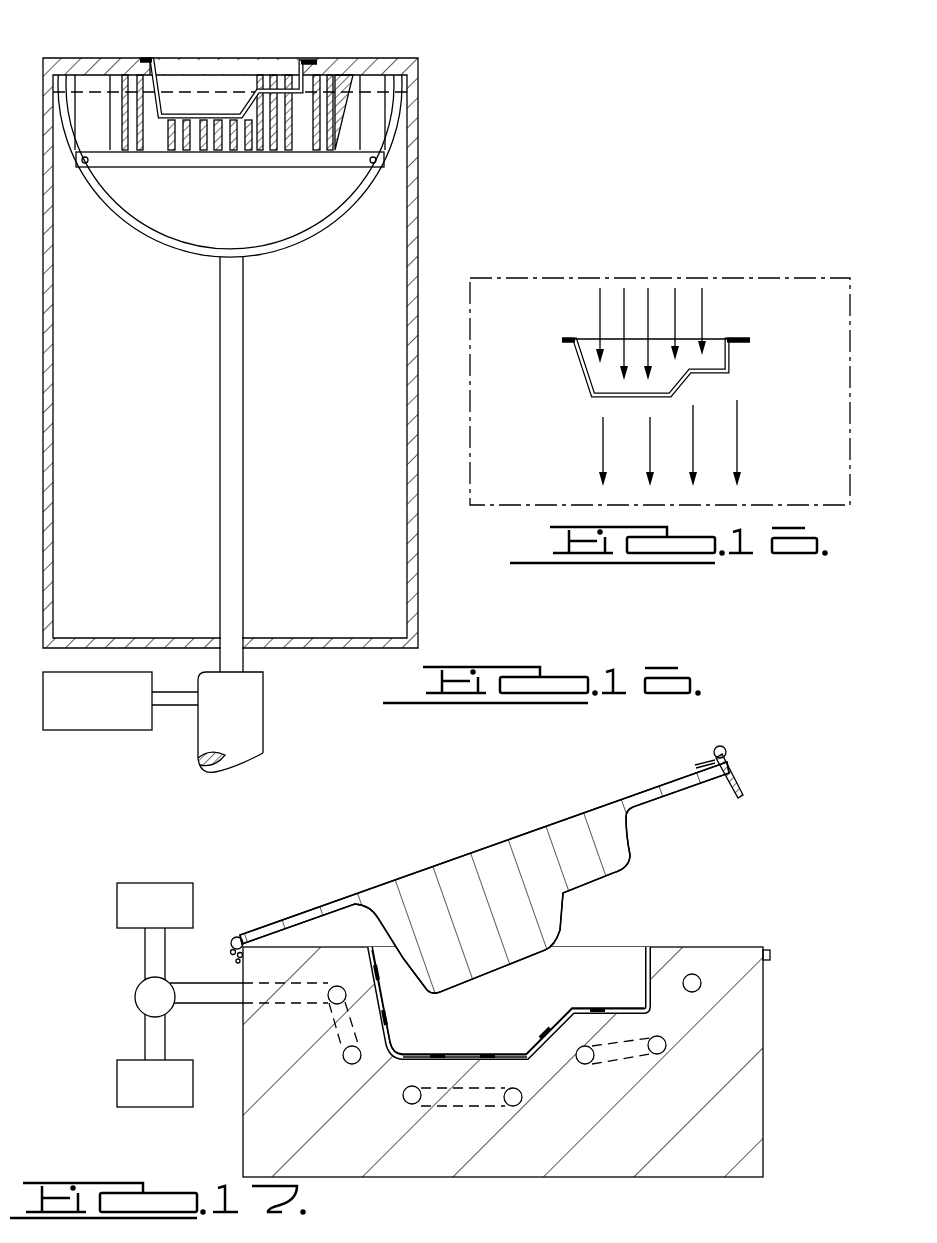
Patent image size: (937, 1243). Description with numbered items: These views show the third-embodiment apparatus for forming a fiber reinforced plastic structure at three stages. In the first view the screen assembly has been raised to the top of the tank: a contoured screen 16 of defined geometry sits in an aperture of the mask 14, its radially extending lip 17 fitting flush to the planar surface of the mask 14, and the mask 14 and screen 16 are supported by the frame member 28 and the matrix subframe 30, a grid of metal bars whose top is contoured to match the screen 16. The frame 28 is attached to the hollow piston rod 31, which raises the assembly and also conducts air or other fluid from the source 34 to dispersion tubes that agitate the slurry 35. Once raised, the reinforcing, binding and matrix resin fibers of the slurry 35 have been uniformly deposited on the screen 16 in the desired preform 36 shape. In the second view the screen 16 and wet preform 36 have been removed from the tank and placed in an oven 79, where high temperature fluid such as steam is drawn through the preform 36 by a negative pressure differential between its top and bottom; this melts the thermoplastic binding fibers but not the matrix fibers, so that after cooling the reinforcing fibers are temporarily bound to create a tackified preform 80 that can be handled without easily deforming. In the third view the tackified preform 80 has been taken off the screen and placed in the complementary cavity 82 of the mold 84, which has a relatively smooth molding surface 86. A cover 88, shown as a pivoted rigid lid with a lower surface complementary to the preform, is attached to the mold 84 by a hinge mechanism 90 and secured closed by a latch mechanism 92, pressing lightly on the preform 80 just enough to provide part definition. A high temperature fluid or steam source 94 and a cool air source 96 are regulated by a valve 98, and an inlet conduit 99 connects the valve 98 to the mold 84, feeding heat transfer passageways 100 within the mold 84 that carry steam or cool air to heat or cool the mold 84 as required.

In FIG. 15, the mask 14 is at (97, 78).
In FIG. 15, the contoured screen 16 is at (113, 73).
In FIG. 16, the contoured screen 16 is at (597, 402).
In FIG. 15, the radially extending lip 17 is at (45, 438).
In FIG. 15, the frame member 28 is at (150, 232).
In FIG. 15, the matrix subframe 30 is at (358, 118).
In FIG. 15, the hollow piston rod 31 is at (220, 496).
In FIG. 15, the source 34 is at (88, 732).
In FIG. 15, the slurry 35 is at (97, 355).
In FIG. 15, the preform 36 is at (255, 90).
In FIG. 16, the preform 36 is at (590, 340).
In FIG. 16, the oven 79 is at (753, 287).
In FIG. 17, the tackified preform 80 is at (627, 947).
In FIG. 17, the complementary cavity 82 is at (533, 1057).
In FIG. 17, the mold 84 is at (763, 1043).
In FIG. 17, the molding surface 86 is at (383, 1057).
In FIG. 17, the cover 88 is at (360, 895).
In FIG. 17, the hinge mechanism 90 is at (232, 938).
In FIG. 17, the latch mechanism 92 is at (727, 748).
In FIG. 17, the high temperature fluid or steam source 94 is at (117, 893).
In FIG. 17, the cool air source 96 is at (117, 1090).
In FIG. 17, the valve 98 is at (135, 998).
In FIG. 17, the inlet conduit 99 is at (205, 995).
In FIG. 17, the heat transfer passageways 100 is at (345, 1058).